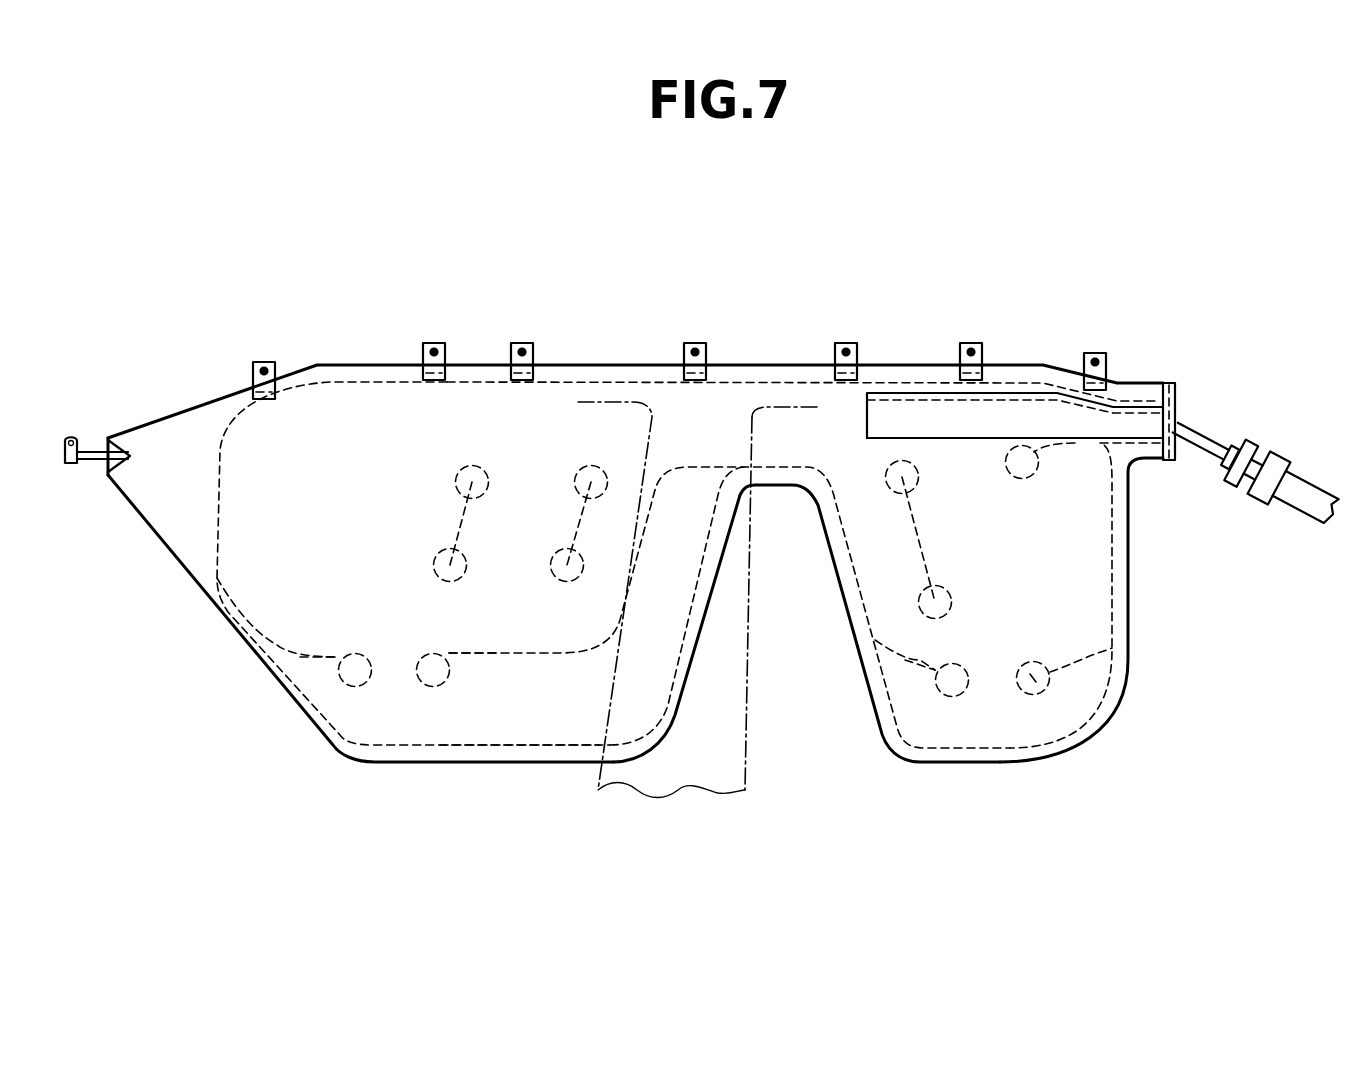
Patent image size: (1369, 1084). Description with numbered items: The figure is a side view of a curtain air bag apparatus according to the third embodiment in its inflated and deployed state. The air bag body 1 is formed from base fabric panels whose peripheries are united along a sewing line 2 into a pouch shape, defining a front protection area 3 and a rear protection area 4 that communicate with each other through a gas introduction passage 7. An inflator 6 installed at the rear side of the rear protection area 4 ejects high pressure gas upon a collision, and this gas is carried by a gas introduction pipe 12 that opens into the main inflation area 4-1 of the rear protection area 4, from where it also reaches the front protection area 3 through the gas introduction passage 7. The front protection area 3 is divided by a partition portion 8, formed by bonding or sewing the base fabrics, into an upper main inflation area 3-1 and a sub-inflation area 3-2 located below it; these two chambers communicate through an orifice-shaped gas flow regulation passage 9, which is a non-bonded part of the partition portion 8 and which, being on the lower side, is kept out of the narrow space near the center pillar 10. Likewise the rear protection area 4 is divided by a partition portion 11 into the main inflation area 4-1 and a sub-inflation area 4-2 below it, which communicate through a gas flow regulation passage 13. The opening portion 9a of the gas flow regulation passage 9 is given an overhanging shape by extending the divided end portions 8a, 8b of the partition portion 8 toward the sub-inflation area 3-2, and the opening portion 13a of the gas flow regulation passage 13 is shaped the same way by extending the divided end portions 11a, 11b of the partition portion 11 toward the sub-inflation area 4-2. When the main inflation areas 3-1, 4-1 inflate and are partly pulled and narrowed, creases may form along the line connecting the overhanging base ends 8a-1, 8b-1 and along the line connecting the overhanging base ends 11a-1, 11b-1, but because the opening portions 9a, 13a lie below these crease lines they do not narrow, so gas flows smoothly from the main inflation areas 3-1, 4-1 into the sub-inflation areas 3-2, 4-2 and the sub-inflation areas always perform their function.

The air bag body 1 is at (217, 617).
The sewing line 2 is at (217, 497).
The front protection area 3 is at (468, 362).
The main inflation area 3-1 is at (376, 506).
The sub-inflation area 3-2 is at (529, 726).
The rear protection area 4 is at (1137, 663).
The main inflation area 4-1 is at (1062, 561).
The sub-inflation area 4-2 is at (1073, 697).
The inflator 6 is at (1310, 482).
The gas introduction passage 7 is at (713, 427).
The partition portion 8 is at (547, 655).
The divided end portion 8a is at (345, 683).
The overhanging base end 8a-1 is at (337, 656).
The divided end portion 8b is at (437, 688).
The overhanging base end 8b-1 is at (446, 660).
The gas flow regulation passage 9 is at (393, 675).
The opening portion 9a is at (418, 671).
The center pillar 10 is at (667, 792).
The partition portion 11 is at (900, 660).
The divided end portion 11a is at (953, 697).
The overhanging base end 11a-1 is at (928, 667).
The divided end portion 11b is at (1045, 690).
The overhanging base end 11b-1 is at (1053, 667).
The gas introduction pipe 12 is at (1012, 418).
The gas flow regulation passage 13 is at (990, 657).
The opening portion 13a is at (1027, 682).